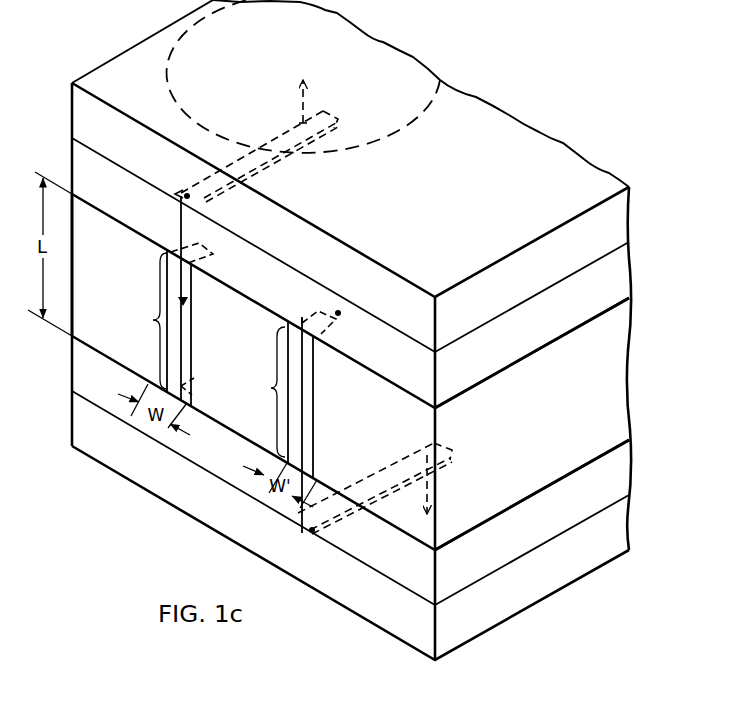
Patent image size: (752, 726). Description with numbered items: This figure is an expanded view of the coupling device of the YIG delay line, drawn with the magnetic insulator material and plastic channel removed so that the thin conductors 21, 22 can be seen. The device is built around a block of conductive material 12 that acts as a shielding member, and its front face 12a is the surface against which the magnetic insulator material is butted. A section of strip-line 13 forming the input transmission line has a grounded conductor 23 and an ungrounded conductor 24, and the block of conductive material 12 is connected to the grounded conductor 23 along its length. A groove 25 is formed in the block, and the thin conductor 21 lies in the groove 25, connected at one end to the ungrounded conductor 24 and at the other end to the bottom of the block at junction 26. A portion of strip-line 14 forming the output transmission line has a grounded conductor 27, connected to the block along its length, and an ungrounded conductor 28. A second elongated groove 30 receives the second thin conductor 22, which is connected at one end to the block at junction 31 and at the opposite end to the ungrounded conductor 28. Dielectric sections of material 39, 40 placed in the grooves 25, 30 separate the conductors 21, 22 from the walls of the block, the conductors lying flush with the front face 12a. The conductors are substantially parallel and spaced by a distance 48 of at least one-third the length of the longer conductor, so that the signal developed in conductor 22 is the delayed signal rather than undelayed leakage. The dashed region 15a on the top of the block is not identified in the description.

The block of conductive material 12 is at (622, 364).
The front face 12a is at (93, 241).
The strip-line 13 is at (634, 188).
The strip-line 14 is at (634, 441).
The bubble domain region 15a is at (381, 142).
The thin conductor 21 is at (181, 285).
The second thin conductor 22 is at (303, 393).
The grounded conductor 23 is at (527, 359).
The ungrounded conductor 24 is at (290, 132).
The groove 25 is at (144, 321).
The junction 26 is at (204, 389).
The grounded conductor 27 is at (496, 514).
The ungrounded conductor 28 is at (377, 483).
The second elongated groove 30 is at (263, 392).
The junction 31 is at (338, 312).
The dielectric section of material 39 is at (188, 257).
The dielectric section of material 40 is at (302, 317).
The distance between conductors 48 is at (299, 369).